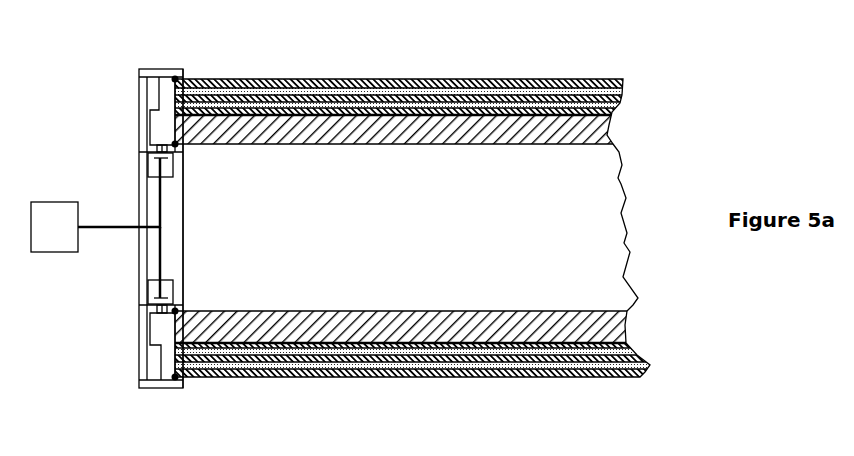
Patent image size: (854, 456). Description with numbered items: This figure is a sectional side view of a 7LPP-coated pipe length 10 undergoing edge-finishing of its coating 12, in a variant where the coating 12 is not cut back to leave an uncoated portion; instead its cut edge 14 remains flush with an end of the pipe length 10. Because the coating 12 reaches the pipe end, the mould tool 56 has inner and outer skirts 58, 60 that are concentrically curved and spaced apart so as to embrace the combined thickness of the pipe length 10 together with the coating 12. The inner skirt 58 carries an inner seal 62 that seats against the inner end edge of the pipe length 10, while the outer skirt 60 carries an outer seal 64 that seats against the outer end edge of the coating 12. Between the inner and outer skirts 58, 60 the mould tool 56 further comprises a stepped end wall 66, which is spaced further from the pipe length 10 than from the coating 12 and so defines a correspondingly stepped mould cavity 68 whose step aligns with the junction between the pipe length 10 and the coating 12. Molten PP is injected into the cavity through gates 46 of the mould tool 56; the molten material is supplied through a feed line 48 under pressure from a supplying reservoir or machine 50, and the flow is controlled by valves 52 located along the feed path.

The pipe length 10 is at (615, 295).
The 7LPP coating 12 is at (373, 87).
The cut edge 14 is at (175, 97).
The gates 46 is at (156, 147).
The feed line 48 is at (116, 229).
The supplying reservoir or machine 50 is at (57, 221).
The valves 52 is at (162, 160).
The mould tool 56 is at (128, 55).
The inner skirt 58 is at (177, 145).
The outer skirt 60 is at (166, 73).
The inner seal 62 is at (177, 310).
The outer seal 64 is at (179, 379).
The stepped end wall 66 is at (148, 368).
The stepped mould cavity 68 is at (167, 363).